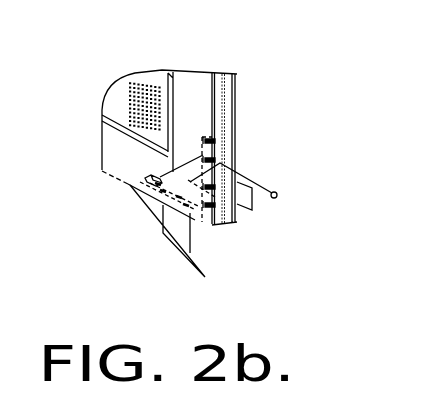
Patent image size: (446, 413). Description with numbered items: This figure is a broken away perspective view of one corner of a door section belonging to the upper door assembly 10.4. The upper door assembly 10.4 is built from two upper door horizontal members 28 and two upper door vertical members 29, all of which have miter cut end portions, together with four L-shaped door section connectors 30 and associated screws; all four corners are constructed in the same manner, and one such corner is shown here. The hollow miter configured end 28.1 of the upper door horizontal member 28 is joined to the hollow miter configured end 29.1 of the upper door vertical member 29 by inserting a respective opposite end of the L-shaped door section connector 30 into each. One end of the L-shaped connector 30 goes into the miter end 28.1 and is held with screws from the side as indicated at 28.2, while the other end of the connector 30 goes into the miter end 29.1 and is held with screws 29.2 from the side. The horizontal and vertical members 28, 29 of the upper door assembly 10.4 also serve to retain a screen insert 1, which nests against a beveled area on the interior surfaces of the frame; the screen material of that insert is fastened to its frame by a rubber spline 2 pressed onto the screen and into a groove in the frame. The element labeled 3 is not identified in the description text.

The screen insert 1 is at (127, 92).
The rubber spline 2 is at (102, 122).
The side panel 3 is at (172, 71).
The upper door assembly 10.4 is at (238, 72).
The upper door horizontal member 28 is at (102, 171).
The hollow miter configured end 28.1 is at (145, 178).
The screws 28.2 is at (178, 242).
The upper door vertical member 29 is at (235, 108).
The hollow miter configured end 29.1 is at (218, 165).
The screws 29.2 is at (278, 193).
The L-shaped door section connector 30 is at (232, 223).